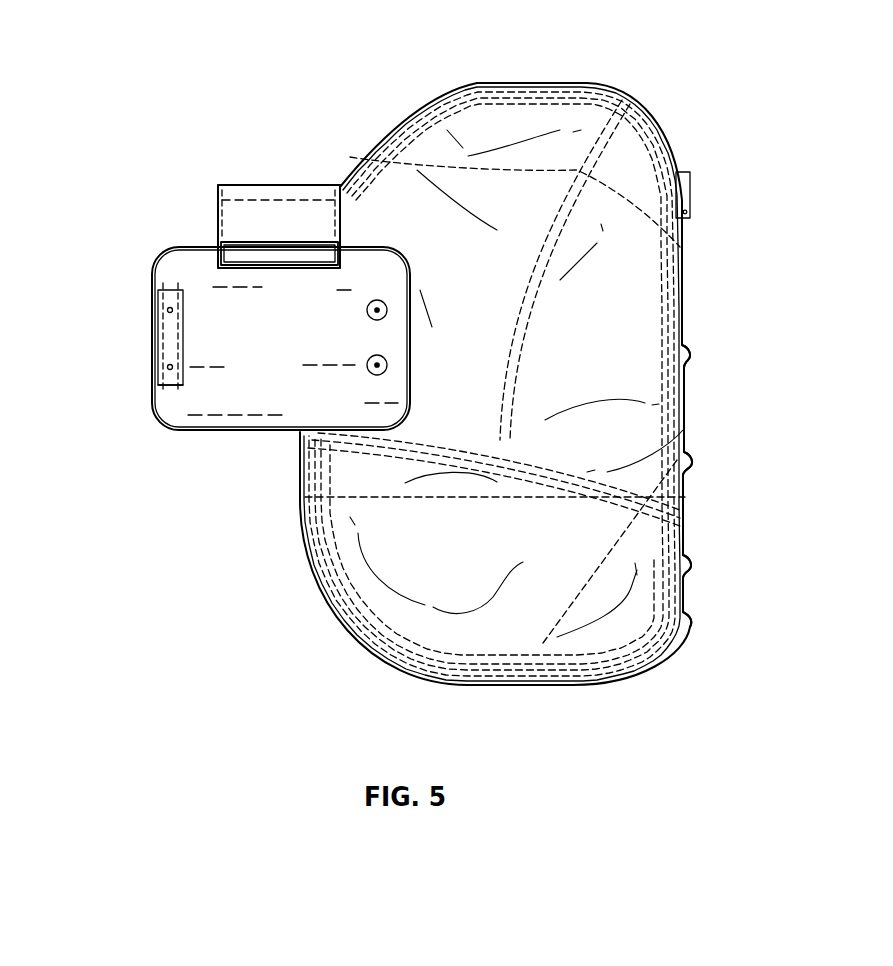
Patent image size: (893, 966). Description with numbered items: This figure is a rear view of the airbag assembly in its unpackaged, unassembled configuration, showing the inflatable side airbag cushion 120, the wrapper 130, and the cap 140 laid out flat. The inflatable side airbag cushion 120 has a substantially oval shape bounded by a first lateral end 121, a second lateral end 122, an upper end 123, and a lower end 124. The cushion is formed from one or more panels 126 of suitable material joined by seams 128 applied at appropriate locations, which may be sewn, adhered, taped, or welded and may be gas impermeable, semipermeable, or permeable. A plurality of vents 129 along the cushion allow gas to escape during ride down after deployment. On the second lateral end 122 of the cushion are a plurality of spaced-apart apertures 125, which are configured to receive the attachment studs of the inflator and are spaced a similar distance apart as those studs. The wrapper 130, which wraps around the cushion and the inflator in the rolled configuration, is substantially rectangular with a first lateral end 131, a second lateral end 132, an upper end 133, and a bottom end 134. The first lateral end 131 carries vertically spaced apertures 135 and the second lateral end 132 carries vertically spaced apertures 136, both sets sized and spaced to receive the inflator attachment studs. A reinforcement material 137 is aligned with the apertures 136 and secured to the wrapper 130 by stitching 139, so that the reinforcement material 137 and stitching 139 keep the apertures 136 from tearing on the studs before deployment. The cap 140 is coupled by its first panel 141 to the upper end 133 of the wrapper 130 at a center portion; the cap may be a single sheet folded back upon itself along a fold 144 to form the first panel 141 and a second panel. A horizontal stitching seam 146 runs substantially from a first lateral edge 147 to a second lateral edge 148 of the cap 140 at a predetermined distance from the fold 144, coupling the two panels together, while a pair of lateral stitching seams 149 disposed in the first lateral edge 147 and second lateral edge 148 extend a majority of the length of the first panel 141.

The inflatable side airbag cushion 120 is at (660, 389).
The first lateral end 121 is at (688, 340).
The second lateral end 122 is at (542, 180).
The upper end 123 is at (518, 82).
The lower end 124 is at (553, 685).
The apertures 125 is at (385, 300).
The panels 126 is at (622, 235).
The seams 128 is at (530, 263).
The vents 129 is at (670, 422).
The wrapper 130 is at (200, 432).
The first lateral end 131 is at (410, 378).
The second lateral end 132 is at (157, 308).
The upper end 133 is at (185, 246).
The bottom end 134 is at (240, 432).
The apertures 135 is at (387, 310).
The apertures 136 is at (168, 309).
The reinforcement material 137 is at (170, 386).
The stitching 139 is at (158, 343).
The cap 140 is at (243, 185).
The first panel 141 is at (320, 213).
The fold 144 is at (247, 213).
The horizontal stitching seam 146 is at (278, 200).
The first lateral edge 147 is at (347, 203).
The second lateral edge 148 is at (217, 240).
The lateral stitching seams 149 is at (217, 217).